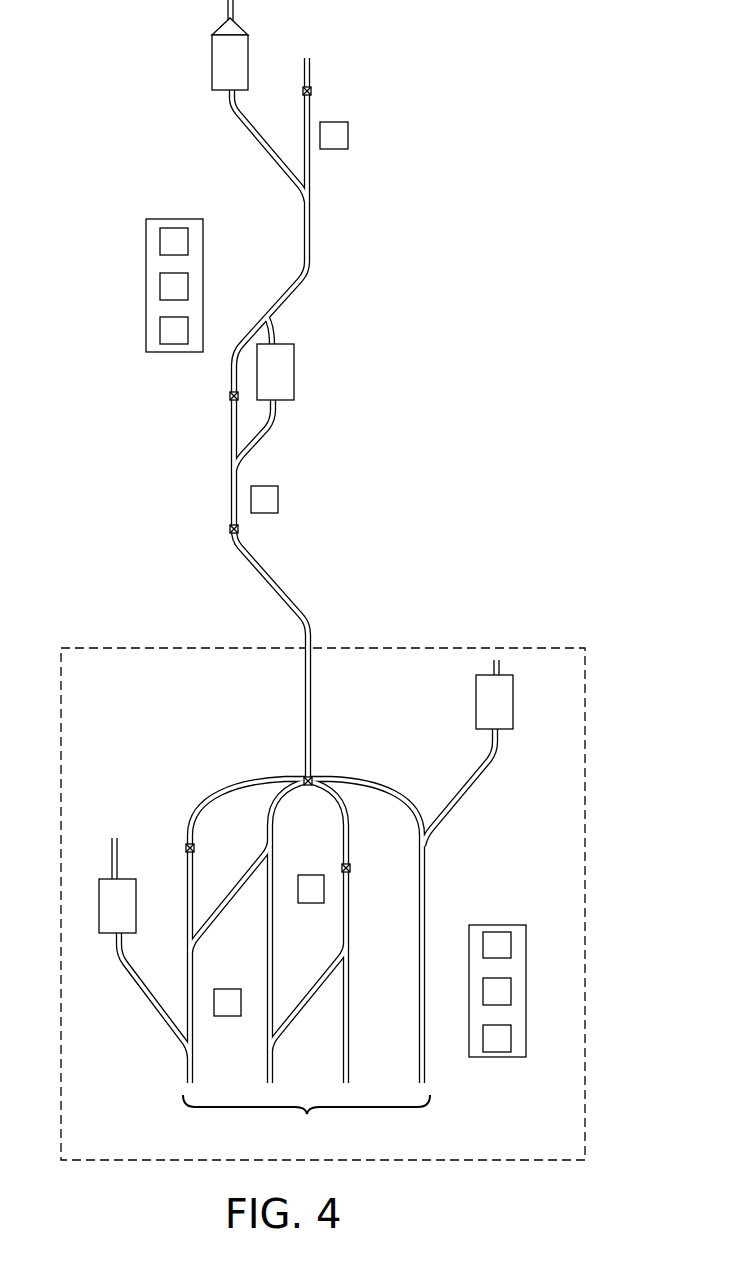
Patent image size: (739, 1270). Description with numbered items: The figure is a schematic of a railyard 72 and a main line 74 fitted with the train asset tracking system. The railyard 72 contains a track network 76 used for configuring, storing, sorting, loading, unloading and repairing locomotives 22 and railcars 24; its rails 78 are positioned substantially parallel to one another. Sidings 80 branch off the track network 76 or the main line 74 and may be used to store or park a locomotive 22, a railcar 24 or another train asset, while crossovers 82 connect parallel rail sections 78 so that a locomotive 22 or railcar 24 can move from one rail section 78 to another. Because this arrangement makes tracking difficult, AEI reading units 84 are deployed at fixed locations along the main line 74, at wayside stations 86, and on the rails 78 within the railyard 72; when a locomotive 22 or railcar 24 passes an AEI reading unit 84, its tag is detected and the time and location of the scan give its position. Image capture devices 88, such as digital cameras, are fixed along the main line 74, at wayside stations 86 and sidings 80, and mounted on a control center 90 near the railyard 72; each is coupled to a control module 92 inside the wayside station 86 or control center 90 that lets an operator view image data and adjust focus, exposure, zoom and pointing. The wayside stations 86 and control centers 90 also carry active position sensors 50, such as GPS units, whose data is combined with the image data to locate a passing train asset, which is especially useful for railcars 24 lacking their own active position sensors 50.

The locomotive 22 is at (212, 63).
The railcar 24 is at (294, 370).
The active position sensor 50 is at (175, 285).
The railyard 72 is at (543, 662).
The main line 74 is at (309, 622).
The track network 76 is at (324, 963).
The rail 78 is at (194, 1068).
The siding 80 is at (232, 108).
The crossover 82 is at (238, 883).
The AEI reading unit 84 is at (311, 91).
The wayside station 86 is at (146, 240).
The image capture device 88 is at (348, 134).
The control center 90 is at (520, 948).
The control module 92 is at (172, 228).